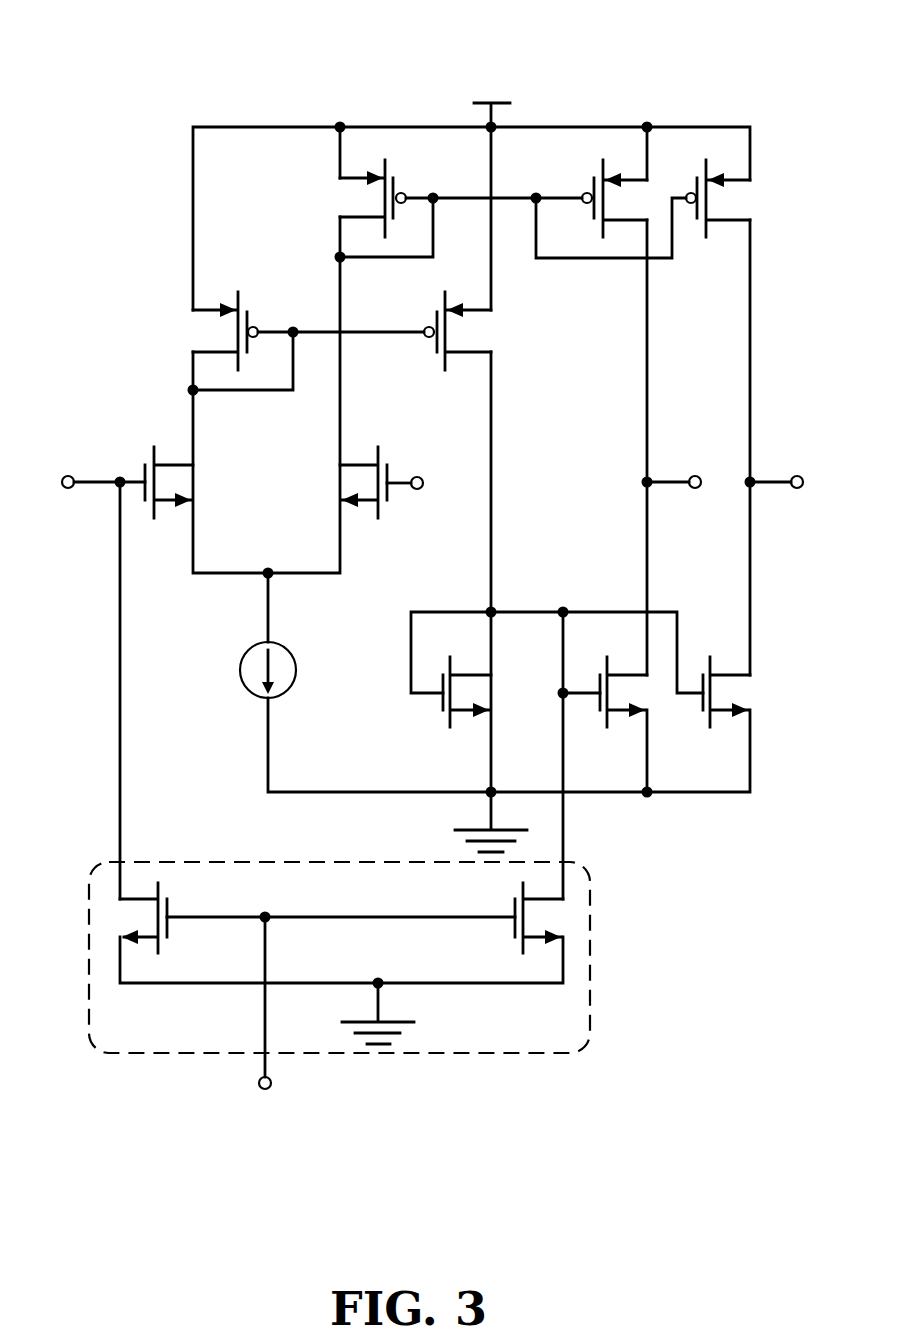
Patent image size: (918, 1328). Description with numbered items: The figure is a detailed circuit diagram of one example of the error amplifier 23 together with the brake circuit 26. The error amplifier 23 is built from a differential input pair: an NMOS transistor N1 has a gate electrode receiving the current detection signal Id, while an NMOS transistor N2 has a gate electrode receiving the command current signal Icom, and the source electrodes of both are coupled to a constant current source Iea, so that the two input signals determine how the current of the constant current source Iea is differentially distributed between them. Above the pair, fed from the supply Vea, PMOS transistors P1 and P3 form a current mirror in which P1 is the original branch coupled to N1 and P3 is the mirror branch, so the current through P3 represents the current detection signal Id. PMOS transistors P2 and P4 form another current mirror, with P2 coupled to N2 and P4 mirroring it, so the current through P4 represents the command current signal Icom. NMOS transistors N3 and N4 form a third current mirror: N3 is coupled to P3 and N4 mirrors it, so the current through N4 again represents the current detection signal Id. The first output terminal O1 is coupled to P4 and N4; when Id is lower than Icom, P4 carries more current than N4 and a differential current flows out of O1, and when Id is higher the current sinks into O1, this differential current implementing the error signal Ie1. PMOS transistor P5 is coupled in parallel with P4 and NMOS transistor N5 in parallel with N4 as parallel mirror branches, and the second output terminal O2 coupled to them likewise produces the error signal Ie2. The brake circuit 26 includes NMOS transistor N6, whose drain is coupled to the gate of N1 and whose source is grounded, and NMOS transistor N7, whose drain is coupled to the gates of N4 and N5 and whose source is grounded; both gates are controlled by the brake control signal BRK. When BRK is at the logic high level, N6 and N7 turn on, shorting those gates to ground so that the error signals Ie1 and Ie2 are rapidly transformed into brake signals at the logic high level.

The error amplifier 23 is at (726, 72).
The brake circuit 26 is at (590, 936).
The supply voltage Vea is at (492, 96).
The PMOS transistor P1 is at (209, 331).
The PMOS transistor P2 is at (355, 198).
The PMOS transistor P3 is at (476, 331).
The PMOS transistor P4 is at (599, 197).
The PMOS transistor P5 is at (735, 198).
The NMOS transistor N1 is at (191, 482).
The NMOS transistor N2 is at (342, 482).
The NMOS transistor N3 is at (445, 698).
The NMOS transistor N4 is at (617, 706).
The NMOS transistor N5 is at (750, 692).
The NMOS transistor N6 is at (176, 917).
The NMOS transistor N7 is at (511, 917).
The current detection signal Id is at (83, 481).
The command current signal Icom is at (431, 465).
The constant current source Iea is at (298, 670).
The output terminal O1 is at (637, 471).
The output terminal O2 is at (740, 495).
The error signal Ie1 is at (681, 461).
The error signal Ie2 is at (786, 461).
The brake control signal BRK is at (271, 1027).